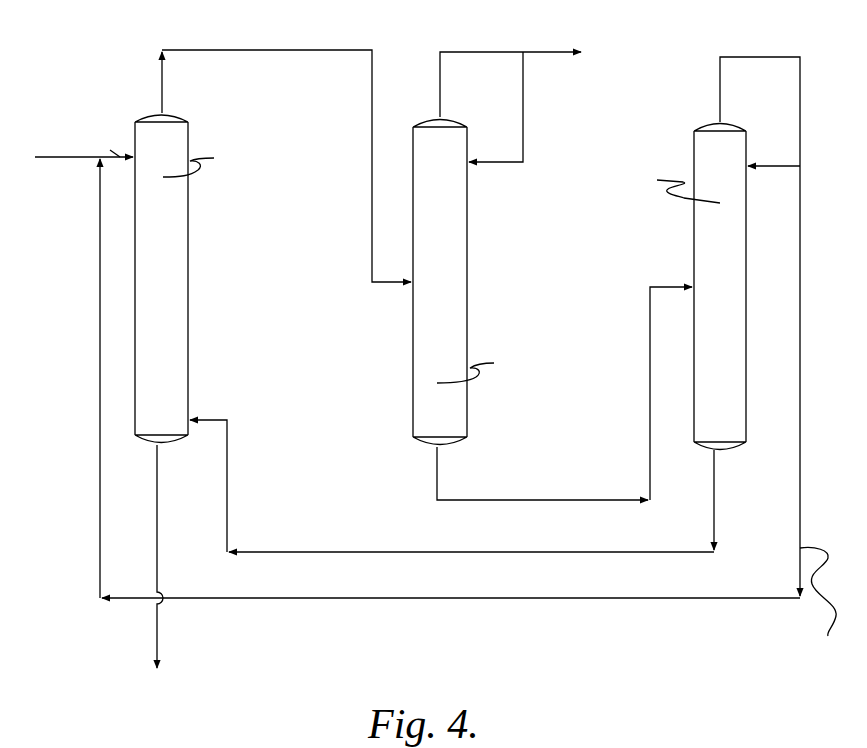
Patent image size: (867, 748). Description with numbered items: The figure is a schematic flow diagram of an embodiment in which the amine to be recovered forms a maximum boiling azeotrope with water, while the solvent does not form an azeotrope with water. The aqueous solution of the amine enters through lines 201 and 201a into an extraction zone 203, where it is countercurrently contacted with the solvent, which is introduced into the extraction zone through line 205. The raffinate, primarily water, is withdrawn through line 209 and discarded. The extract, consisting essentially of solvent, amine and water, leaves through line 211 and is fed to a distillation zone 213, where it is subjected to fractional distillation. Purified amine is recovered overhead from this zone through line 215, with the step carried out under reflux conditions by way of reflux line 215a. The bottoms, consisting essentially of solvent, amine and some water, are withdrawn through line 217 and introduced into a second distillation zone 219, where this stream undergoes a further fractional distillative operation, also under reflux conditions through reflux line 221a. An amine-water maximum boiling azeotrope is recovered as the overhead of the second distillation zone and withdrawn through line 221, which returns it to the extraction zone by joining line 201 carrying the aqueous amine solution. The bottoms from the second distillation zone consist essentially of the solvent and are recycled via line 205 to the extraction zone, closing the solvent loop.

The line 201 is at (63, 160).
The line 201a is at (110, 155).
The extraction zone 203 is at (178, 327).
The line 205 is at (343, 548).
The line 209 is at (158, 563).
The line 211 is at (278, 56).
The distillation zone 213 is at (460, 286).
The purified amine overhead line 215 is at (486, 44).
The reflux line 215a is at (523, 115).
The line 217 is at (529, 498).
The second distillation zone 219 is at (730, 303).
The line 221 is at (766, 56).
The reflux line 221a is at (781, 168).